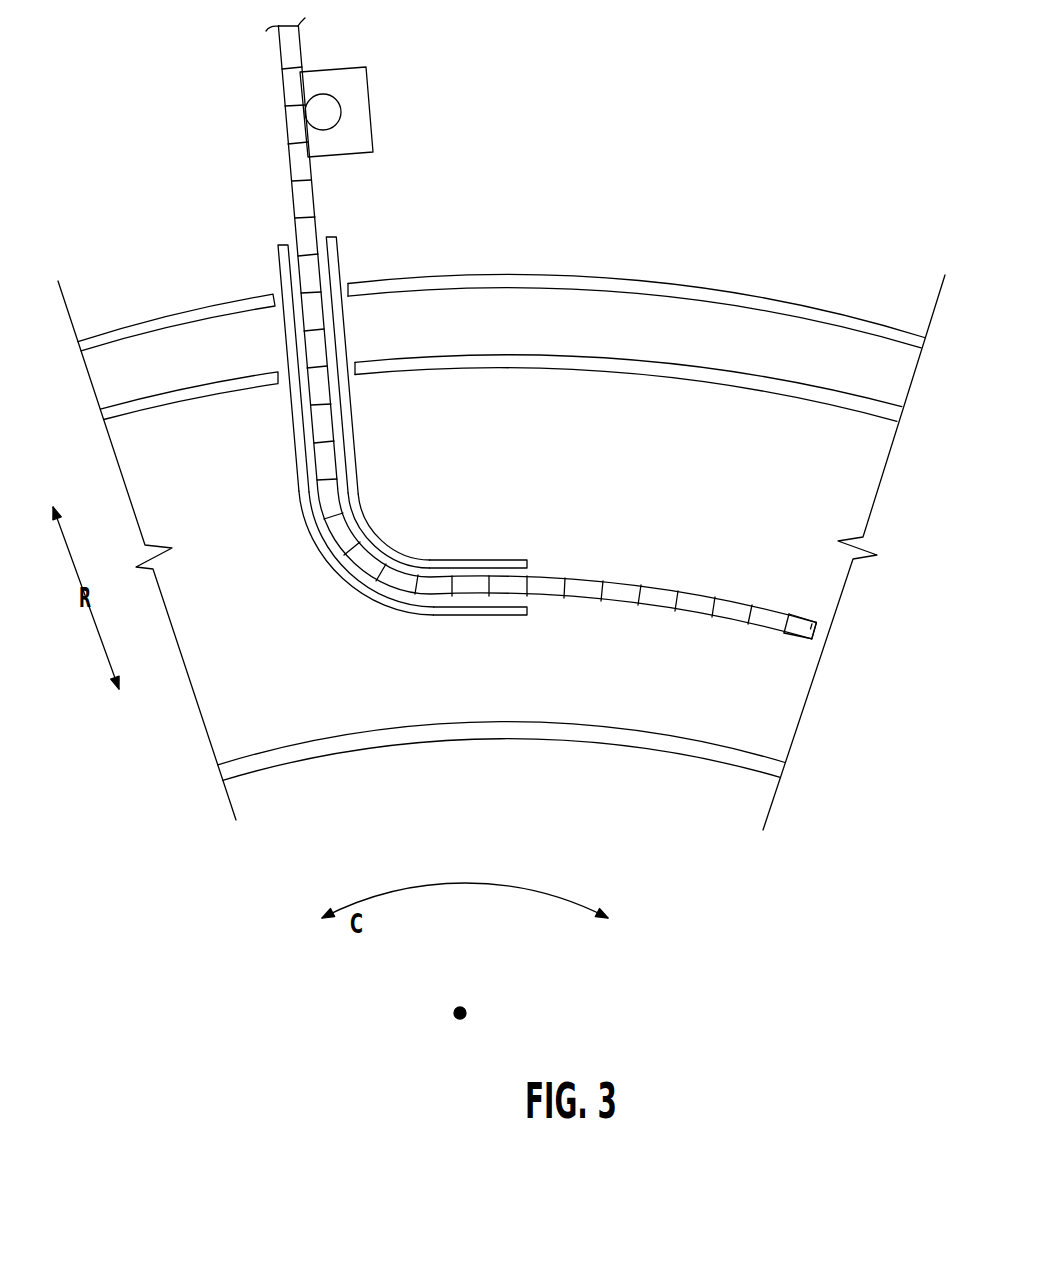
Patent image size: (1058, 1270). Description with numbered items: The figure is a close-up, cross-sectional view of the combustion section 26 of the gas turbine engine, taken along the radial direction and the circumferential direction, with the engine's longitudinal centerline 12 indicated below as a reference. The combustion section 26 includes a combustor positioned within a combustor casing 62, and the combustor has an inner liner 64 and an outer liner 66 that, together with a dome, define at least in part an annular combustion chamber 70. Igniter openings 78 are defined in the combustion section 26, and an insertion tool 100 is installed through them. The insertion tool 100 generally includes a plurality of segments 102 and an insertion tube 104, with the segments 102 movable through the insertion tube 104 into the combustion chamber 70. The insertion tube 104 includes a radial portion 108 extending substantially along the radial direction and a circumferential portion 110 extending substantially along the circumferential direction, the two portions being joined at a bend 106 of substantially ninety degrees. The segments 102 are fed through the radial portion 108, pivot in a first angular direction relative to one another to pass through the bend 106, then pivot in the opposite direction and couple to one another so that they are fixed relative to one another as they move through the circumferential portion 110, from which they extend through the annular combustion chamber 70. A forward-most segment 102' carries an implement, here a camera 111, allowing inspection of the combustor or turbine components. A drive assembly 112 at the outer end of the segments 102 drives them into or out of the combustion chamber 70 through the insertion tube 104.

The longitudinal centerline 12 is at (457, 1019).
The combustion section 26 is at (841, 197).
The combustor casing 62 is at (613, 277).
The inner liner 64 is at (552, 730).
The outer liner 66 is at (741, 371).
The combustion chamber 70 is at (715, 511).
The igniter openings 78 is at (272, 279).
The insertion tool 100 is at (375, 462).
The segments 102 is at (541, 328).
The forward-most segment 102' is at (766, 665).
The insertion tube 104 is at (283, 473).
The bend 106 is at (343, 602).
The radial portion 108 is at (350, 393).
The circumferential portion 110 is at (473, 617).
The camera 111 is at (820, 627).
The drive assembly 112 is at (394, 82).